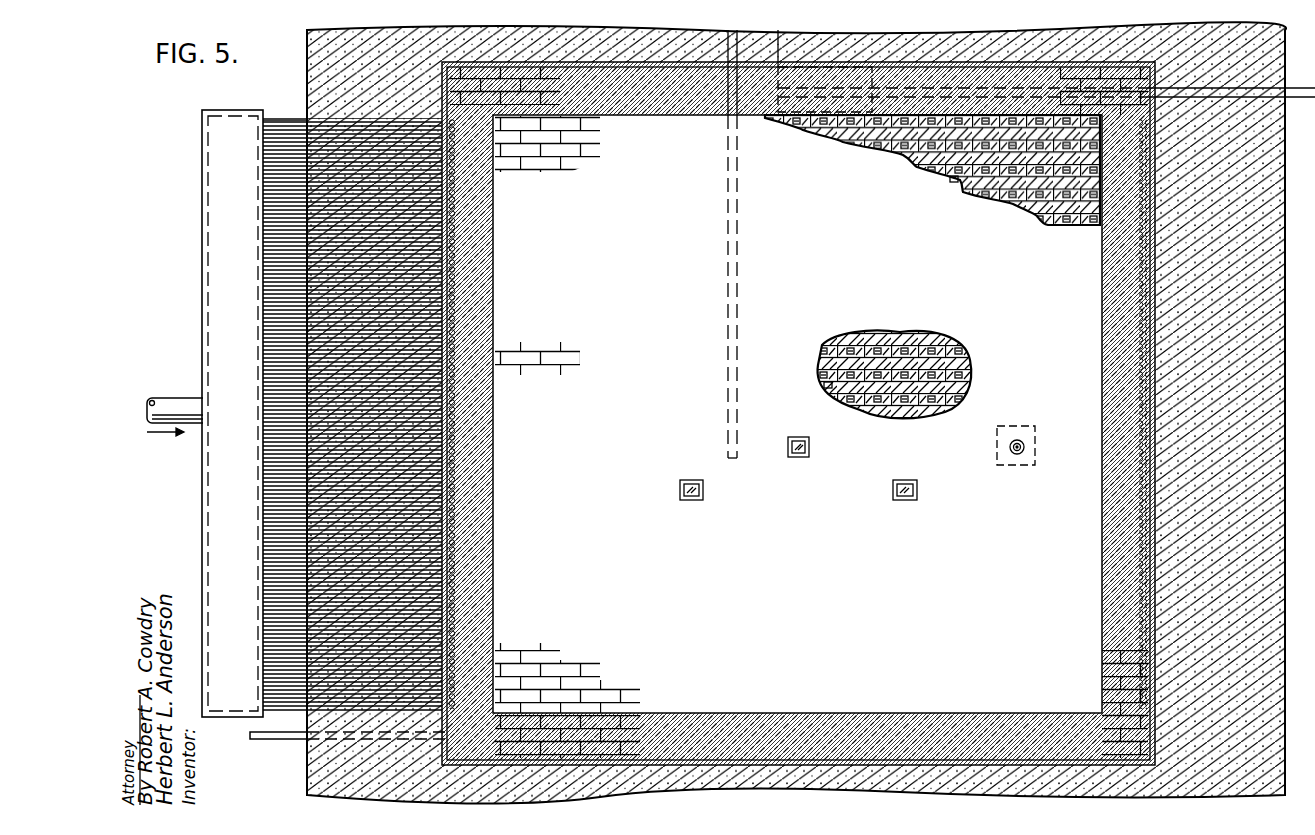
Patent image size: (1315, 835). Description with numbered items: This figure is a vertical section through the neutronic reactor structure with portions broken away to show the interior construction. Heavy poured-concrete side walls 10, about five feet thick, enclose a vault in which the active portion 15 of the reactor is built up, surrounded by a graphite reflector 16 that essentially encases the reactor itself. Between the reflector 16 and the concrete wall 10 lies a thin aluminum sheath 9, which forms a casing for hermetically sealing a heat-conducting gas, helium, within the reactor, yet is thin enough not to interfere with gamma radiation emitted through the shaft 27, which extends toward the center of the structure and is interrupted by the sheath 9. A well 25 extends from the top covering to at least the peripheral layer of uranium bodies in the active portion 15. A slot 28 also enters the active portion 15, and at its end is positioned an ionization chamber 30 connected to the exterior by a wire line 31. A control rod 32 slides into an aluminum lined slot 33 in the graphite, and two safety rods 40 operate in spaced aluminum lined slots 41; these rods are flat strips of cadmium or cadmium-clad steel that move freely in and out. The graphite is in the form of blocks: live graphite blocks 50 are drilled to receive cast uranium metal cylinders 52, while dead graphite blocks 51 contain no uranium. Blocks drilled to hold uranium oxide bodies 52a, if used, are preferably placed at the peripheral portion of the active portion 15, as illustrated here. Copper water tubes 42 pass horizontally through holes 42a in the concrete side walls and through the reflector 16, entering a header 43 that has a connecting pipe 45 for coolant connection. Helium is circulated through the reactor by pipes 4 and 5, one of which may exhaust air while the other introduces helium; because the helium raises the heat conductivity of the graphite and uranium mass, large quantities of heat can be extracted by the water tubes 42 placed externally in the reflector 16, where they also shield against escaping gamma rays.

The helium pipe 4 is at (287, 741).
The helium pipe 5 is at (1290, 91).
The aluminum sheath 9 is at (1148, 648).
The side walls 10 is at (1280, 236).
The active portion 15 is at (866, 628).
The graphite reflector 16 is at (1120, 622).
The well 25 is at (767, 117).
The shaft 27 is at (737, 207).
The slot 28 is at (1022, 447).
The ionization chamber 30 is at (1033, 452).
The wire line 31 is at (1018, 456).
The control rod 32 is at (798, 460).
The aluminum lined slot 33 is at (810, 448).
The safety rods 40 is at (692, 500).
The aluminum lined slots 41 is at (692, 480).
The water tubes 42 is at (281, 125).
The holes 42a is at (303, 118).
The header 43 is at (222, 466).
The connecting pipe 45 is at (170, 398).
The live graphite blocks 50 is at (968, 370).
The dead graphite blocks 51 is at (823, 385).
The uranium bodies 52 is at (935, 343).
The uranium oxide bodies 52a is at (1002, 203).